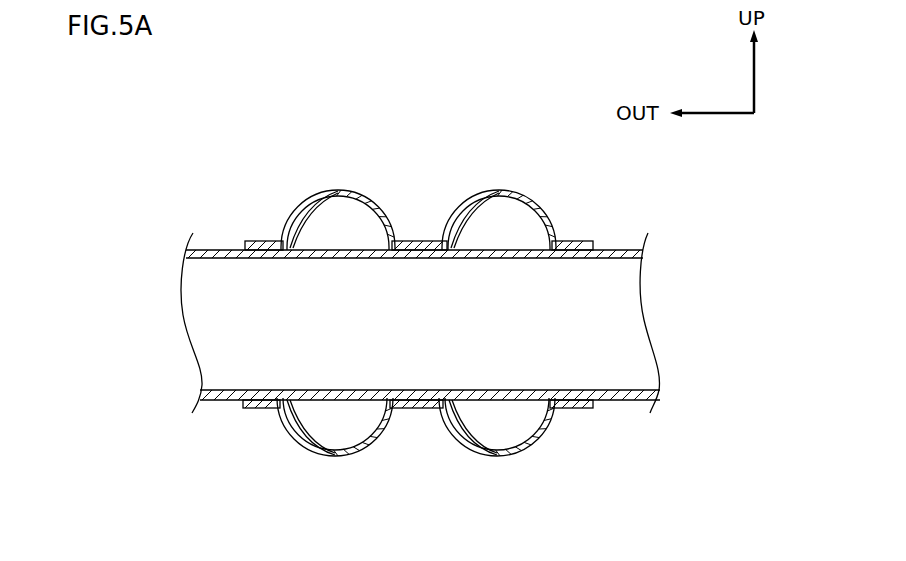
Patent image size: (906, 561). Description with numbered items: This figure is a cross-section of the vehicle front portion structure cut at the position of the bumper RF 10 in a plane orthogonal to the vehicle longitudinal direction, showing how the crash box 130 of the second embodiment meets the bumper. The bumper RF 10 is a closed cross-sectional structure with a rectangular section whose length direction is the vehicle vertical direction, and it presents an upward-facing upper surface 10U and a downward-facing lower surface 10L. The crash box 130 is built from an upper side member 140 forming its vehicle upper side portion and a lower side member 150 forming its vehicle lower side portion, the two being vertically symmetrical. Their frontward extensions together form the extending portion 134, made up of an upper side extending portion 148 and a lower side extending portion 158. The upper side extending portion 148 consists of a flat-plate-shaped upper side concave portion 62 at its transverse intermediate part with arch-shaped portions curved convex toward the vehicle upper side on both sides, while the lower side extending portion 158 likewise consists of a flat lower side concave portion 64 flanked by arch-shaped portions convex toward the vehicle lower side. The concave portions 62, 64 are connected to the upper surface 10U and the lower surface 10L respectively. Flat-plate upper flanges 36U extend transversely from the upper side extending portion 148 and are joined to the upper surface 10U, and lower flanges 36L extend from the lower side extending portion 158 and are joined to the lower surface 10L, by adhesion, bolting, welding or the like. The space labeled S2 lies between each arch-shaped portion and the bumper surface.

The bumper RF 10 is at (627, 249).
The upper surface 10U is at (198, 248).
The lower surface 10L is at (206, 402).
The upper flange 36U is at (274, 241).
The lower flange 36L is at (255, 408).
The upper side concave portion 62 is at (421, 242).
The lower side concave portion 64 is at (418, 408).
The crash box 130 is at (259, 115).
The extending portion 134 is at (416, 316).
The upper side member 140 is at (309, 183).
The upper side extending portion 148 is at (371, 200).
The lower side member 150 is at (316, 457).
The lower side extending portion 158 is at (378, 441).
The space between arch and wall S2 is at (512, 90).